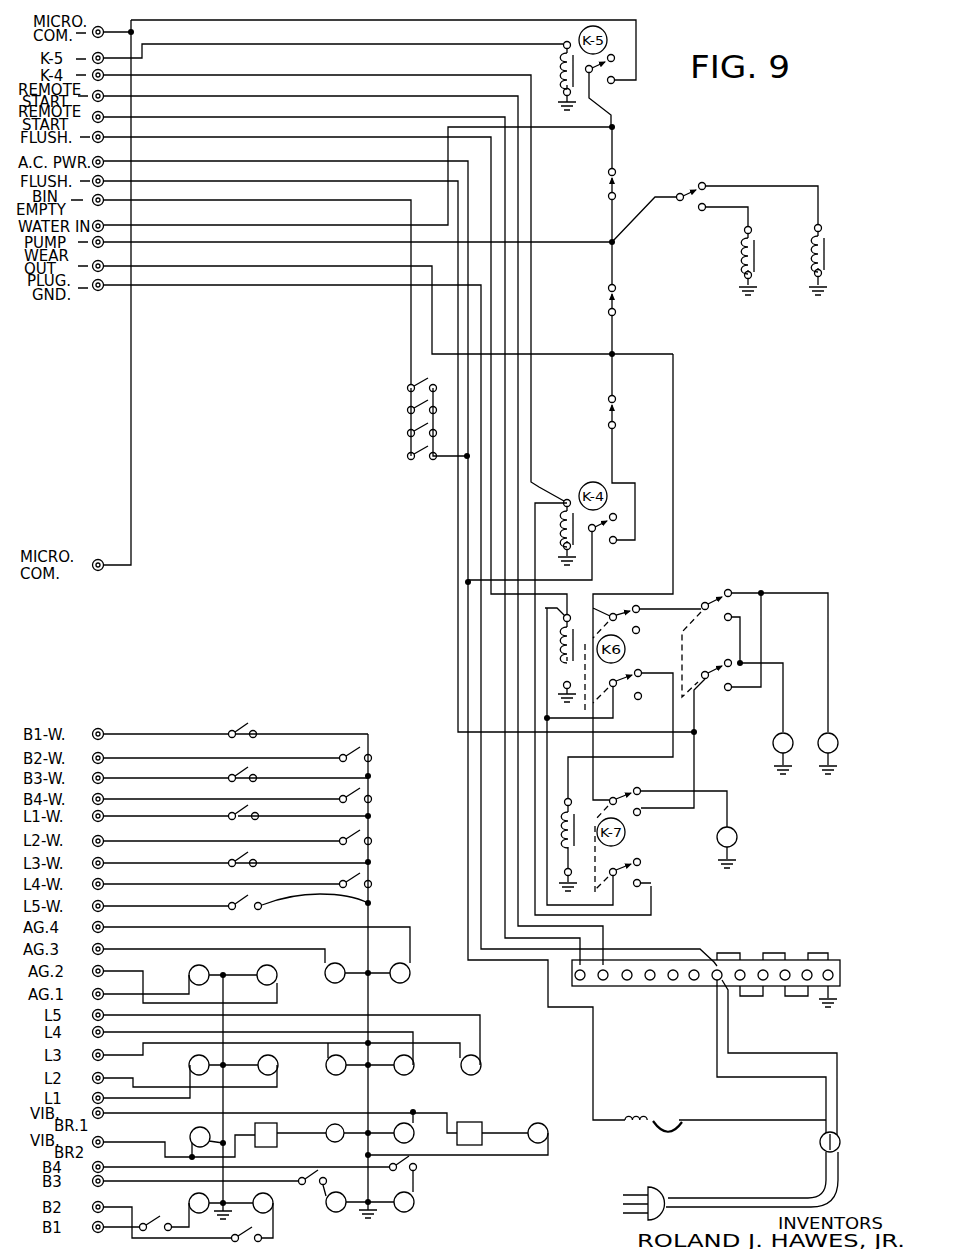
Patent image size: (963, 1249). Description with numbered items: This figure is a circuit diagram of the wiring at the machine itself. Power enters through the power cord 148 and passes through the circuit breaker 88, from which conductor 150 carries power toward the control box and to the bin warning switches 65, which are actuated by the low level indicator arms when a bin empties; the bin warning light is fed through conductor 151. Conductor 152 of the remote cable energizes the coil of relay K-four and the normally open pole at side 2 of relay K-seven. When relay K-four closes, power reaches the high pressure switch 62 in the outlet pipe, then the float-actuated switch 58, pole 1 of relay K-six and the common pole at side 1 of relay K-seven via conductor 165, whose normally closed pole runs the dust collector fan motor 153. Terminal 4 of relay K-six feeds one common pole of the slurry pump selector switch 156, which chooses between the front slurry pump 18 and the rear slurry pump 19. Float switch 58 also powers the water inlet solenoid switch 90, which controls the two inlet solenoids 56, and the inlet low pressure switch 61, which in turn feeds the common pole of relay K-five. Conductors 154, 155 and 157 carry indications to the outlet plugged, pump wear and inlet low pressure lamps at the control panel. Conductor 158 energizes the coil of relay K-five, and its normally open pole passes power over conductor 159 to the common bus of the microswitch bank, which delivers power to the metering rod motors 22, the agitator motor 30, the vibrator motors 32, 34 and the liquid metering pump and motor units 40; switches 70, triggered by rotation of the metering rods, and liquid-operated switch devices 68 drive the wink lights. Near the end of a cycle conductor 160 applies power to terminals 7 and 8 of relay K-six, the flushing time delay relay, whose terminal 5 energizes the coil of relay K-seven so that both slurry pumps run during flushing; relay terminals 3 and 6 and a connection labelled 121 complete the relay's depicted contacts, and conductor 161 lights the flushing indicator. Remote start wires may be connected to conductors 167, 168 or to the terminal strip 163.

The conductor 159 is at (381, 18).
The conductor 158 is at (381, 42).
The conductor 152 is at (381, 72).
The conductor 167 is at (381, 92).
The conductor 168 is at (381, 114).
The conductor 160 is at (381, 134).
The conductor 150 is at (381, 158).
The conductor 161 is at (381, 178).
The conductor 151 is at (381, 197).
The conductor 157 is at (381, 221).
The conductor 155 is at (381, 239).
The conductor 154 is at (381, 263).
The water inlet solenoid switch 90 is at (687, 192).
The solenoid-actuated water inlet valve 56 is at (804, 256).
The low pressure switch 61 is at (607, 186).
The float-actuated switch 58 is at (607, 305).
The high pressure switch 62 is at (607, 418).
The bin warning switch 65 is at (404, 414).
The conductor 165 is at (676, 413).
The slurry pump selector switch 156 is at (706, 602).
The terminal of relay K-6 7 is at (574, 618).
The terminal of relay K-6 4 is at (641, 616).
The terminal 3 is at (642, 638).
The terminal of relay K-6 8 is at (609, 675).
The terminal of relay K-6 5 is at (645, 680).
The terminal 6 is at (645, 699).
The relay K6 coil terminal 121 is at (581, 692).
The rear slurry pump 19 is at (791, 737).
The front slurry pump 18 is at (836, 737).
The dust collector fan motor 153 is at (737, 839).
The pole 1 is at (612, 793).
The relay contact side 2 is at (607, 865).
The terminal strip 163 is at (834, 958).
The circuit breaker 88 is at (669, 1117).
The power cord 148 is at (666, 1194).
The switches 70 is at (237, 771).
The liquid-operated switch devices 68 is at (230, 859).
The electric motor 30 is at (410, 973).
The liquid-metering pump and motor units 40 is at (481, 1071).
The vibrator motor 34 is at (325, 1128).
The vibrator motor 32 is at (545, 1123).
The metering rod motors 22 is at (392, 1222).